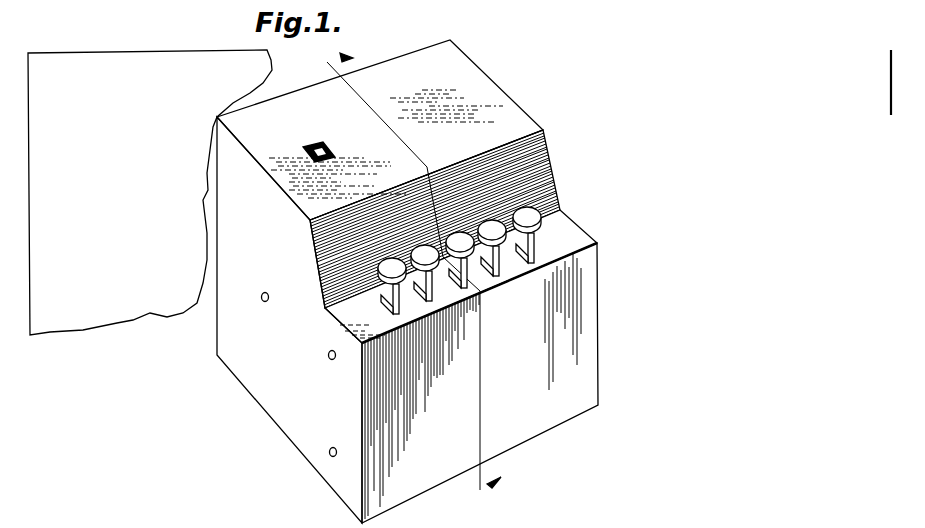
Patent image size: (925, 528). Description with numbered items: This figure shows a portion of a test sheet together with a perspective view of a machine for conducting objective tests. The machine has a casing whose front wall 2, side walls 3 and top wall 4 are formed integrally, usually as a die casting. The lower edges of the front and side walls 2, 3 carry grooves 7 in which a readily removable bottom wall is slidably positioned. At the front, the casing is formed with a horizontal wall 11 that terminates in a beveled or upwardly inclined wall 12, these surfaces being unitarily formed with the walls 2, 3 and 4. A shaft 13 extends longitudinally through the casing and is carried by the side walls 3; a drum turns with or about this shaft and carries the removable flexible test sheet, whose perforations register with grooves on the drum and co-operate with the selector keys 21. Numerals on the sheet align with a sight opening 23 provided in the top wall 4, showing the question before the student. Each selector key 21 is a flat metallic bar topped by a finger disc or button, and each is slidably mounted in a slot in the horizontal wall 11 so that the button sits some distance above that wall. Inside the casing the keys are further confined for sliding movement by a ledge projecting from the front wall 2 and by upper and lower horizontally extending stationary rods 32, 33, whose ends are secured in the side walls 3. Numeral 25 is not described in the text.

The front wall 2 is at (580, 372).
The side walls 3 is at (268, 395).
The top wall 4 is at (380, 130).
The grooves 7 is at (438, 281).
The horizontal wall 11 is at (565, 233).
The inclined wall 12 is at (547, 170).
The shaft 13 is at (260, 301).
The selector keys 21 is at (493, 274).
The sight opening 23 is at (303, 143).
The lettered keys 25 is at (553, 200).
The upper stationary rod 32 is at (328, 353).
The lower stationary rod 33 is at (329, 453).